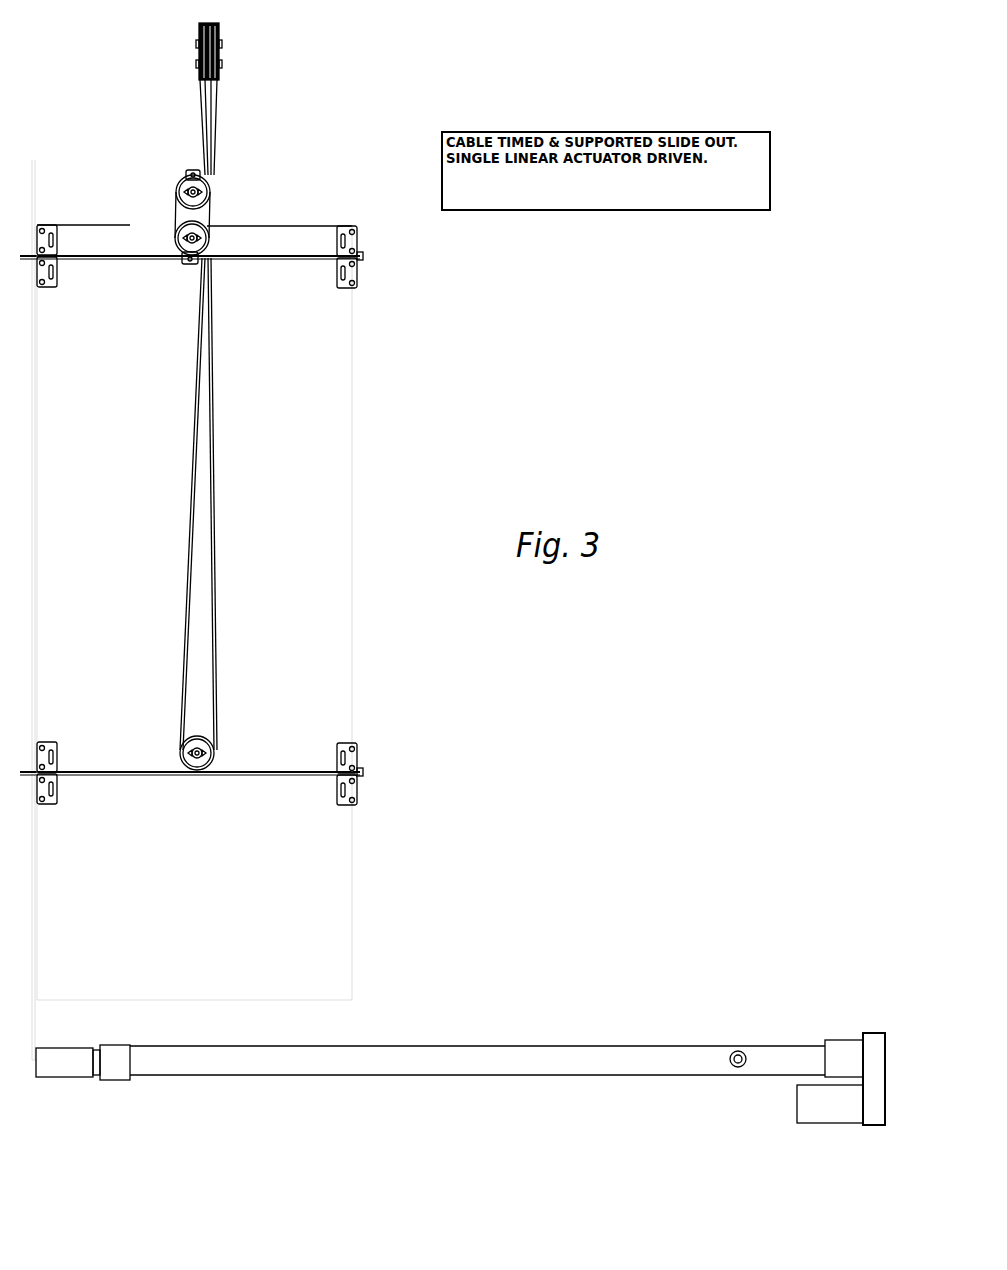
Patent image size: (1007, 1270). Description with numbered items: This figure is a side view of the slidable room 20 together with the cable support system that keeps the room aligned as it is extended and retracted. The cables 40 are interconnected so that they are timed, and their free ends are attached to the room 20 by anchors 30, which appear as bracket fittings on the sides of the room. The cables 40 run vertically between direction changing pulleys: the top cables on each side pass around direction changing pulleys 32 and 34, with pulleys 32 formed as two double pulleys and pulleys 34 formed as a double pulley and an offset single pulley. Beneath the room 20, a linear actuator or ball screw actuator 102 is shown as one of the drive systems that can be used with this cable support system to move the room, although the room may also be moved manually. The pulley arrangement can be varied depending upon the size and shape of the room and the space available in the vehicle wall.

The slidable room 20 is at (364, 524).
The anchors 30 is at (50, 287).
The direction changing pulleys 32 is at (222, 44).
The direction changing pulleys 34 is at (198, 215).
The cables 40 is at (185, 560).
The linear actuator or ball screw actuator 102 is at (428, 1052).